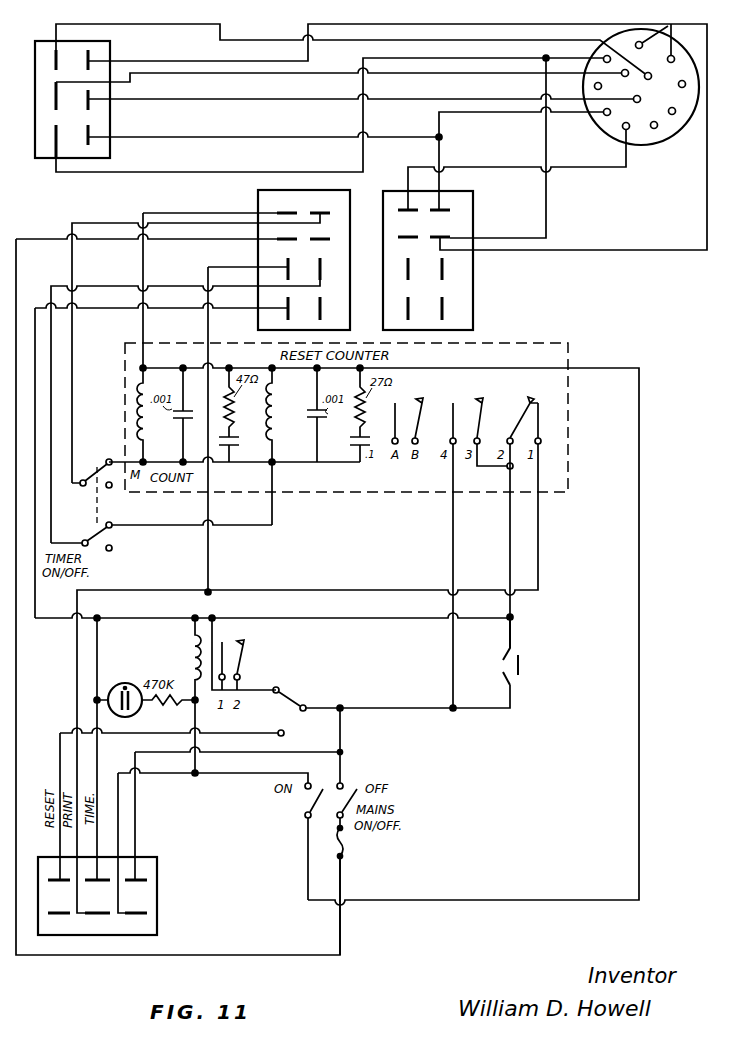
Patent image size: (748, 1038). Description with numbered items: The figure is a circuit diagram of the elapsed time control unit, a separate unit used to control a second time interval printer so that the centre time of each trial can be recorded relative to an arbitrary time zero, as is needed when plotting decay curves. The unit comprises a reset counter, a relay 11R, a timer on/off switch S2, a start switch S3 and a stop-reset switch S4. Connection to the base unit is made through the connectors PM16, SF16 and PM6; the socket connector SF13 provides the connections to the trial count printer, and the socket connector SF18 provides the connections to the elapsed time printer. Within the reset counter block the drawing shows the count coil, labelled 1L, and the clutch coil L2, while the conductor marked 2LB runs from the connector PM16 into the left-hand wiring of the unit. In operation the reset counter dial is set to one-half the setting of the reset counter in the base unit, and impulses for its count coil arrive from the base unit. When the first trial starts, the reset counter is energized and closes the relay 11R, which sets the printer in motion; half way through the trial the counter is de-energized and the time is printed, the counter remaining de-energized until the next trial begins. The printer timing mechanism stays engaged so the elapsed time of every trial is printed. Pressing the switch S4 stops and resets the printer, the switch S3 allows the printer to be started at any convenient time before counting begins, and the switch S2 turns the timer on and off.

The socket connector SF13 is at (112, 50).
The connector PM6 is at (595, 121).
The connector SF16 is at (476, 198).
The connector PM16 is at (304, 251).
The count relay coil 1L is at (156, 404).
The relay contact line 2LB is at (185, 407).
The clutch coil L2 is at (309, 446).
The timer on/off switch S2 is at (88, 493).
The start switch S3 is at (535, 652).
The stop-reset switch S4 is at (307, 688).
The relay 11R is at (184, 656).
The socket connector SF18 is at (131, 904).